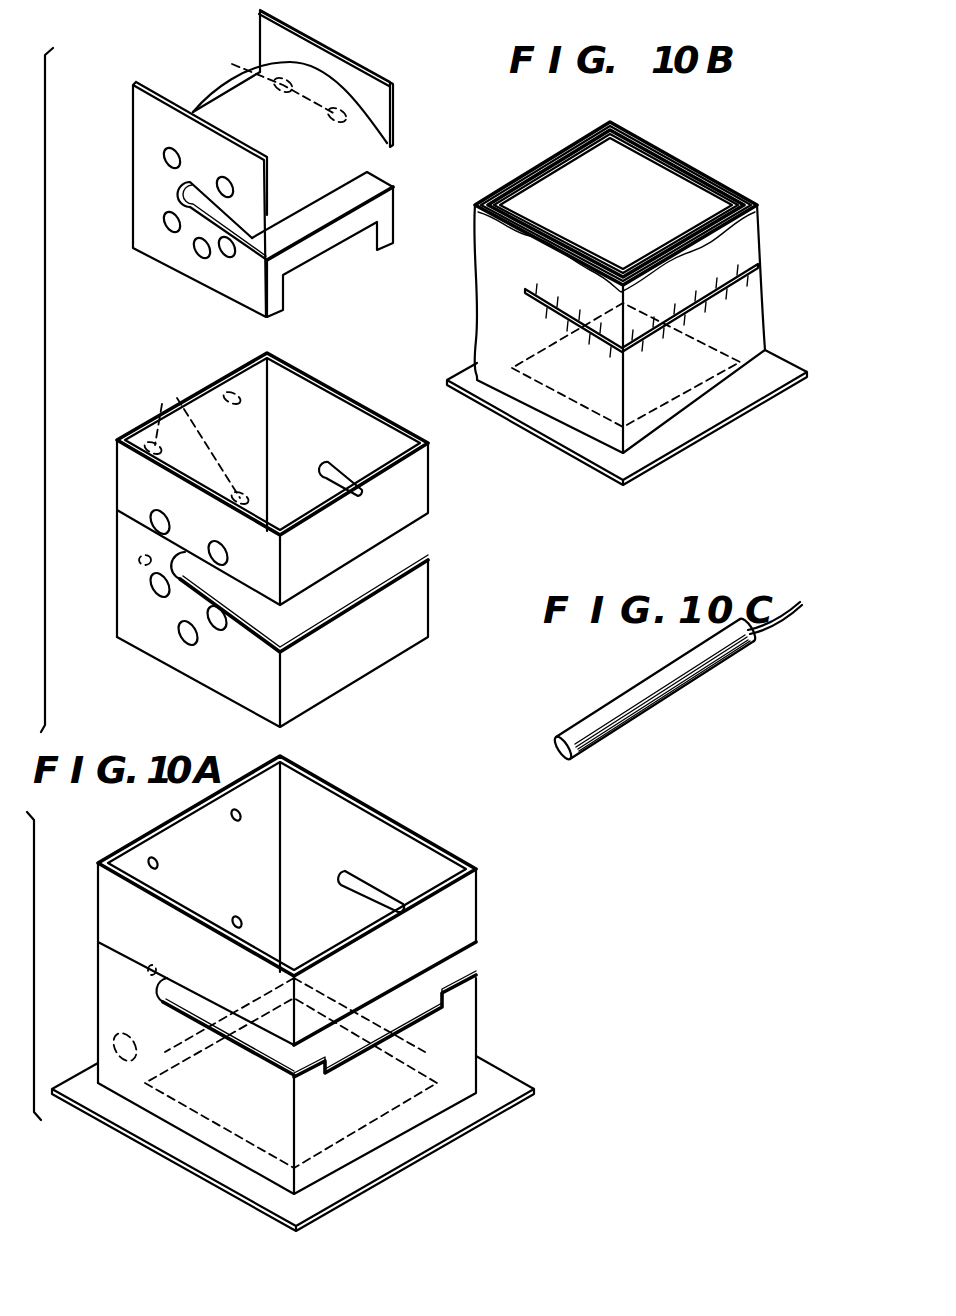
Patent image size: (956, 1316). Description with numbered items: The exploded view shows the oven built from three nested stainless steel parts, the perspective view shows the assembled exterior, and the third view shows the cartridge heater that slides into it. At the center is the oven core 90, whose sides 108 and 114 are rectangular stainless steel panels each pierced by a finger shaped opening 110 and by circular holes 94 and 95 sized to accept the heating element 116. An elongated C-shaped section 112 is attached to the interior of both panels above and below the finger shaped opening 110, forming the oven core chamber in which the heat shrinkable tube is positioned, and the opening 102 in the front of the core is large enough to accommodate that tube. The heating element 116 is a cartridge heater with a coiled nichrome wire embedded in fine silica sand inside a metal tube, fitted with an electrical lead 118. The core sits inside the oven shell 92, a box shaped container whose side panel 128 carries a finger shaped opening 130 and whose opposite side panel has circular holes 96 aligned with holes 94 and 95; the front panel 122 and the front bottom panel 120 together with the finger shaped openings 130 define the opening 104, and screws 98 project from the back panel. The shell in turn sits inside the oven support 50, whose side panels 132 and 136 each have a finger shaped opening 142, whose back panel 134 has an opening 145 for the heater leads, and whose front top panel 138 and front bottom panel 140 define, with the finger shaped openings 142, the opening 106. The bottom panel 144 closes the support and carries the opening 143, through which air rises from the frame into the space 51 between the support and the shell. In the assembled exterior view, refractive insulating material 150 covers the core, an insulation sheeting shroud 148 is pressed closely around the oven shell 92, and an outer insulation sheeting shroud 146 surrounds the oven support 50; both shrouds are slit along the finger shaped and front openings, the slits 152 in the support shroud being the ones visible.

In FIG. 10A, the oven support 50 is at (287, 992).
In FIG. 10B, the oven support 50 is at (625, 296).
In FIG. 10B, the space between oven shell and oven support 51 is at (687, 244).
In FIG. 10A, the oven core 90 is at (251, 170).
In FIG. 10A, the oven shell 92 is at (275, 540).
In FIG. 10B, the oven shell 92 is at (635, 153).
In FIG. 10A, the circular hole 94 is at (164, 160).
In FIG. 10A, the circular hole 95 is at (231, 70).
In FIG. 10A, the circular hole 96 is at (213, 550).
In FIG. 10A, the screws 98 is at (222, 398).
In FIG. 10A, the opening in front of oven core 102 is at (325, 213).
In FIG. 10A, the opening of oven shell 104 is at (403, 562).
In FIG. 10A, the opening of oven support 106 is at (291, 1011).
In FIG. 10A, the side panel of oven core 108 is at (148, 105).
In FIG. 10A, the finger shaped opening 110 is at (203, 215).
In FIG. 10A, the elongated C-shaped section 112 is at (296, 147).
In FIG. 10A, the side panel of oven core 114 is at (310, 47).
In FIG. 10C, the heating element 116 is at (663, 702).
In FIG. 10C, the electrical lead 118 is at (777, 630).
In FIG. 10A, the front bottom panel of oven shell 120 is at (328, 554).
In FIG. 10A, the front panel of oven shell 122 is at (324, 674).
In FIG. 10A, the side panel of oven shell 128 is at (294, 441).
In FIG. 10A, the finger shaped opening 130 is at (188, 563).
In FIG. 10A, the side panel of oven support 132 is at (198, 1101).
In FIG. 10A, the back panel of oven support 134 is at (200, 873).
In FIG. 10A, the side panel of oven support 136 is at (316, 919).
In FIG. 10A, the front top panel of oven support 138 is at (459, 915).
In FIG. 10A, the front bottom panel of oven support 140 is at (286, 1079).
In FIG. 10A, the finger shaped opening 142 is at (181, 1002).
In FIG. 10A, the opening in bottom of oven support 143 is at (197, 1143).
In FIG. 10A, the bottom panel of oven support 144 is at (293, 1143).
In FIG. 10A, the opening for electrical leads 145 is at (117, 1038).
In FIG. 10B, the insulation sheeting shroud 146 is at (730, 187).
In FIG. 10B, the insulation sheeting shroud 148 is at (676, 169).
In FIG. 10B, the refractive insulating material 150 is at (691, 216).
In FIG. 10B, the slits 152 is at (537, 305).